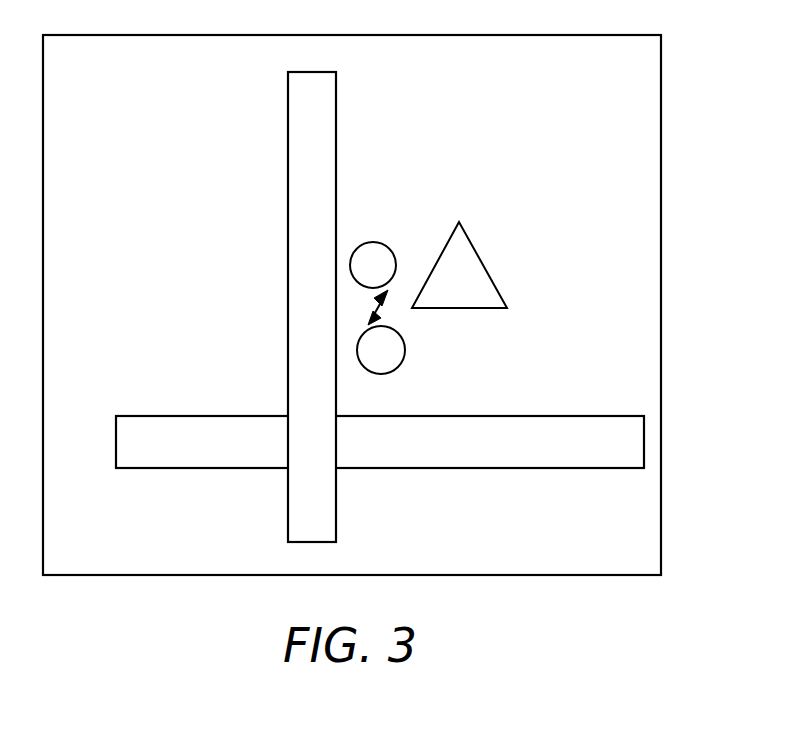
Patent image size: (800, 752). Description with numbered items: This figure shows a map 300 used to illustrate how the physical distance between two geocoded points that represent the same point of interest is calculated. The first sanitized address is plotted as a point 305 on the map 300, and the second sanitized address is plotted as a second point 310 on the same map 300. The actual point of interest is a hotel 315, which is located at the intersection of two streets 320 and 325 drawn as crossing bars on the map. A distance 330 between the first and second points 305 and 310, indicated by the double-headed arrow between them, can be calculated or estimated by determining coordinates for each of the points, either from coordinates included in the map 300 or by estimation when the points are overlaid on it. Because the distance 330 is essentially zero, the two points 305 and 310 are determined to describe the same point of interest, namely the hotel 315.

The map 300 is at (352, 305).
The point 305 is at (390, 248).
The point 310 is at (380, 375).
The hotel 315 is at (457, 280).
The street 320 is at (380, 442).
The street 325 is at (312, 307).
The distance 330 is at (380, 303).